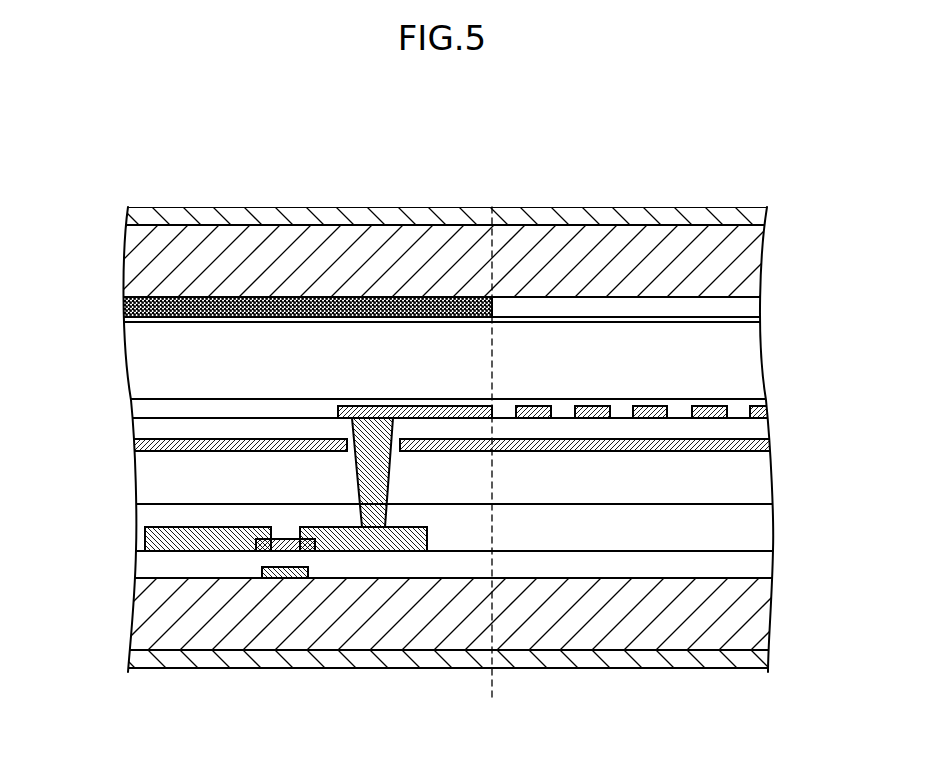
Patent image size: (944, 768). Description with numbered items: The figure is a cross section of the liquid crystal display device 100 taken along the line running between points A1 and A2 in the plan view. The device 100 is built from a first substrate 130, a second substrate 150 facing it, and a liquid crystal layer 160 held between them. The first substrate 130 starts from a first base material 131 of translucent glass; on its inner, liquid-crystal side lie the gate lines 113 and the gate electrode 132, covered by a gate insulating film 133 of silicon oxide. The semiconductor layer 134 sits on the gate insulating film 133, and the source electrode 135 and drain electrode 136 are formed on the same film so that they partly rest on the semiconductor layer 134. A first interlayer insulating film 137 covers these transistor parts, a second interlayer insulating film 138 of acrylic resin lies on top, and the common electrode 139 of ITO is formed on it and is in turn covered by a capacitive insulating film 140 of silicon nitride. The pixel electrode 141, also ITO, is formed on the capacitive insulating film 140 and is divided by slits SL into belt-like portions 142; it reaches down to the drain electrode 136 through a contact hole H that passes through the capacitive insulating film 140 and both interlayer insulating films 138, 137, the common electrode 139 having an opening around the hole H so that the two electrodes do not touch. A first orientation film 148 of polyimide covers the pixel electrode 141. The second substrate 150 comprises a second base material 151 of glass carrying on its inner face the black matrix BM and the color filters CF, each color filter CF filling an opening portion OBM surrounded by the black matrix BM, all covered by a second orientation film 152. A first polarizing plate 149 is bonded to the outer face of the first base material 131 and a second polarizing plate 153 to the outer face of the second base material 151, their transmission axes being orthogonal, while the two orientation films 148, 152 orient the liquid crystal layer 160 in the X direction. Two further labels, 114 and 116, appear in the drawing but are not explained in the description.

The liquid crystal display device 100 is at (194, 176).
The second polarizing plate 153 is at (752, 218).
The second base material 151 is at (752, 248).
The second orientation film 152 is at (745, 322).
The first orientation film 148 is at (748, 401).
The capacitive insulating film 140 is at (755, 429).
The common electrode 139 is at (618, 451).
The belt-like portions 142 is at (650, 276).
The pixel electrode 141 is at (595, 405).
The second interlayer insulating film 138 is at (755, 479).
The first interlayer insulating film 137 is at (755, 529).
The drain electrode 136 is at (363, 528).
The gate insulating film 133 is at (755, 569).
The source electrode 135 is at (208, 628).
The source electrode 114 is at (173, 541).
The semiconductor layer 134 is at (254, 543).
The gate electrode 132 is at (280, 648).
The gate lines 113 is at (275, 578).
The insulating layer 116 is at (324, 572).
The first base material 131 is at (752, 638).
The first polarizing plate 149 is at (752, 664).
The second substrate 150 is at (101, 226).
The liquid crystal layer 160 is at (122, 318).
The first substrate 130 is at (101, 401).
The black matrix BM is at (260, 307).
The opening portion OBM is at (497, 305).
The color filters CF is at (652, 305).
The slits SL is at (683, 400).
The contact hole H is at (375, 515).
The line A1-A2 A1 is at (122, 183).
The line A1- A2 is at (773, 179).